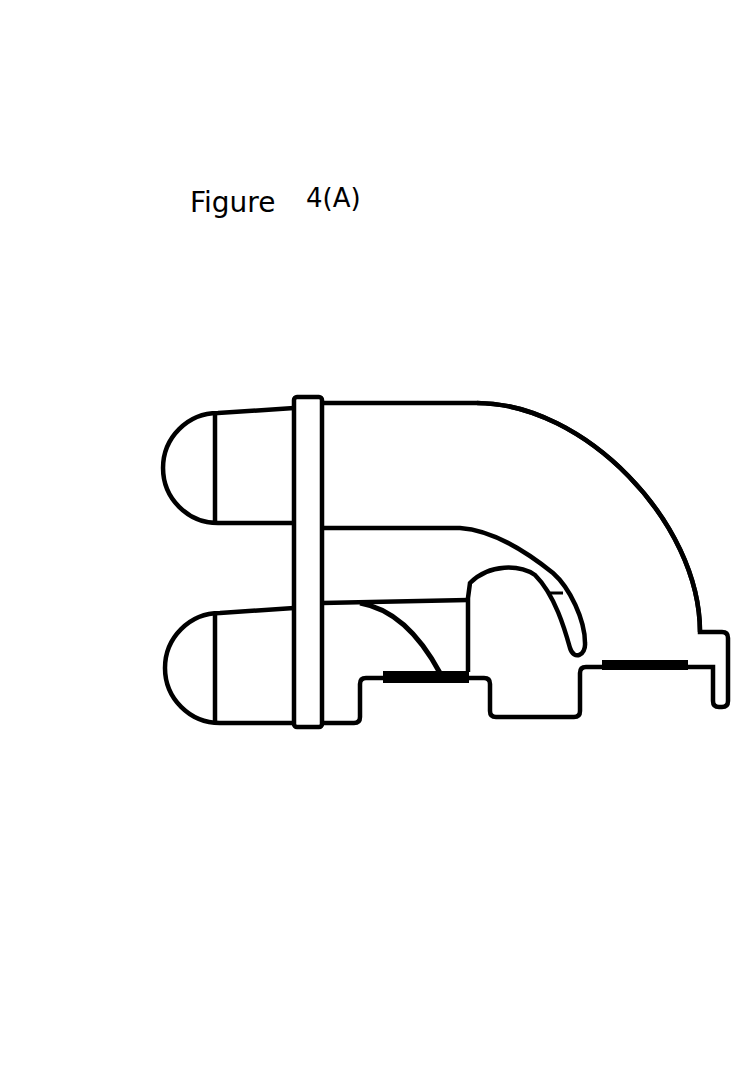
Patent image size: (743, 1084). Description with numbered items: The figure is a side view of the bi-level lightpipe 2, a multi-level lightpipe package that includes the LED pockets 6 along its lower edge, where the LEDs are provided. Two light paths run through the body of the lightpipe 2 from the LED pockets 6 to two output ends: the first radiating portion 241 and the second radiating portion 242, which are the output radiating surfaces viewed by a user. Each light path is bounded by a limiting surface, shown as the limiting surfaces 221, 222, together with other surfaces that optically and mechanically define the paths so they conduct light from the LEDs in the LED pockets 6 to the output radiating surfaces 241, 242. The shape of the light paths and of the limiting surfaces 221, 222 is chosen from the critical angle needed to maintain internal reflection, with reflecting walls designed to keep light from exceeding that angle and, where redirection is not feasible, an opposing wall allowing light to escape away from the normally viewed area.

The bi-level lightpipe 2 is at (359, 350).
The output radiating surface 241 is at (173, 437).
The output radiating surface 242 is at (172, 663).
The limiting surface 221 is at (566, 430).
The limiting surface 222 is at (366, 603).
The LED pocket 6 is at (438, 723).